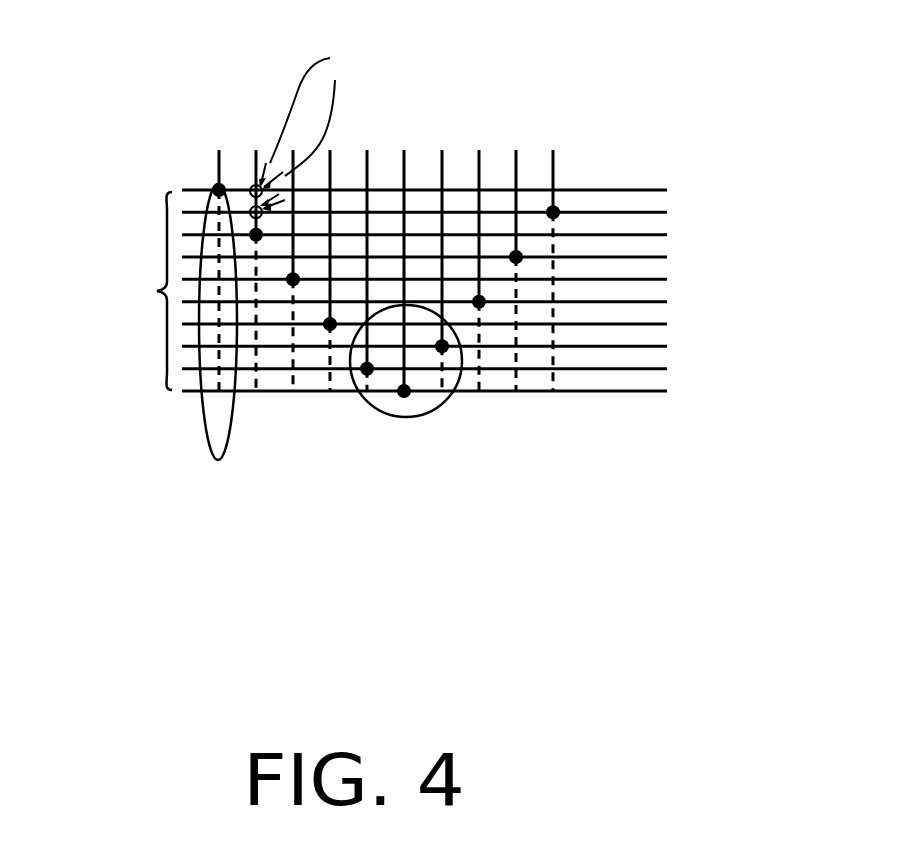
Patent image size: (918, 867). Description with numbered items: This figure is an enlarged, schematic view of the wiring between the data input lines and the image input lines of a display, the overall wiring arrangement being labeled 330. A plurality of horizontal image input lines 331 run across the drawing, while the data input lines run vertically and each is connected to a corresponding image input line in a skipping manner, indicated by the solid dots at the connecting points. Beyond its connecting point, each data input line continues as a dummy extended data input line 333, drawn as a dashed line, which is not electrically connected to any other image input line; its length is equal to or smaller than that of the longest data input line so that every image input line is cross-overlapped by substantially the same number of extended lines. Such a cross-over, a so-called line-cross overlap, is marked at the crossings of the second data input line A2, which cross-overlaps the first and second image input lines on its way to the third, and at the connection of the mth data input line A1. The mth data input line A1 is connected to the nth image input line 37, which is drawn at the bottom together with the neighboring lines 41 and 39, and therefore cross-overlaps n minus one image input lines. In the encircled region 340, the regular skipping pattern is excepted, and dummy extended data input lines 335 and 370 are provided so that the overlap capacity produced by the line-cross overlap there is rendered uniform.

The pixel array / display panel 330 is at (828, 613).
The image input lines 331 is at (154, 290).
The dummy extended data input line 333 is at (204, 432).
The dummy extended data input line 335 is at (365, 382).
The region 340 is at (397, 418).
The dummy extended data input line 370 is at (456, 383).
The scan line 41 is at (655, 348).
The scan line 39 is at (648, 368).
The nth image input line 37 is at (648, 390).
The mth data input line A1 is at (218, 162).
The second data input line A2 is at (256, 157).